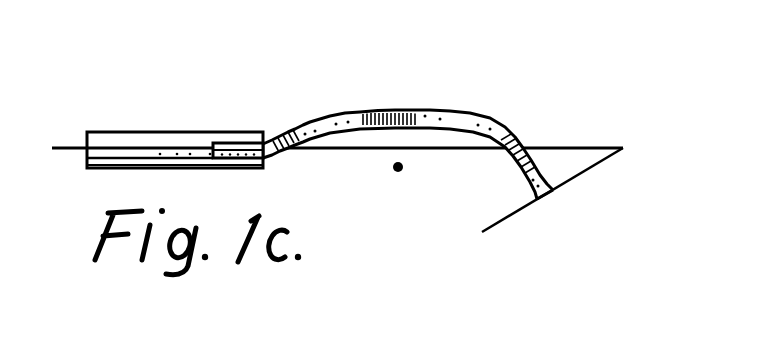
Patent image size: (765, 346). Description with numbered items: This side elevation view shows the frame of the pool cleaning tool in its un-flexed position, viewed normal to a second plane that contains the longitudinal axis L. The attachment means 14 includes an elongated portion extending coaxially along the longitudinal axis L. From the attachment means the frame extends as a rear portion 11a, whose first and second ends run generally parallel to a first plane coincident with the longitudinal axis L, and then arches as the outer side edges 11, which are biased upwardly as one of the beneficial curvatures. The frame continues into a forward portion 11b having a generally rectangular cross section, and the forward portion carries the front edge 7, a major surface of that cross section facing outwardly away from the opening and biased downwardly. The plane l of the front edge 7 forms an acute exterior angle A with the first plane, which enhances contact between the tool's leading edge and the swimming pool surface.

The attachment means 14 is at (148, 131).
The rear portion 11a is at (242, 132).
The outer side edges 11 is at (468, 112).
The longitudinal axis L is at (577, 147).
The acute exterior angle A is at (613, 158).
The forward portion 11b is at (552, 165).
The front edge 7 is at (546, 198).
The plane of front edge l is at (491, 226).